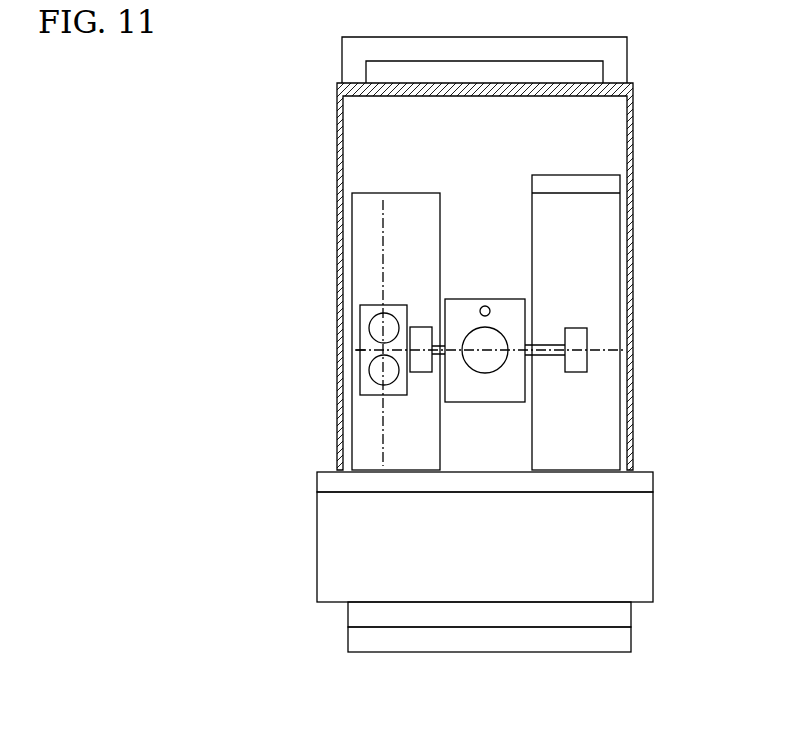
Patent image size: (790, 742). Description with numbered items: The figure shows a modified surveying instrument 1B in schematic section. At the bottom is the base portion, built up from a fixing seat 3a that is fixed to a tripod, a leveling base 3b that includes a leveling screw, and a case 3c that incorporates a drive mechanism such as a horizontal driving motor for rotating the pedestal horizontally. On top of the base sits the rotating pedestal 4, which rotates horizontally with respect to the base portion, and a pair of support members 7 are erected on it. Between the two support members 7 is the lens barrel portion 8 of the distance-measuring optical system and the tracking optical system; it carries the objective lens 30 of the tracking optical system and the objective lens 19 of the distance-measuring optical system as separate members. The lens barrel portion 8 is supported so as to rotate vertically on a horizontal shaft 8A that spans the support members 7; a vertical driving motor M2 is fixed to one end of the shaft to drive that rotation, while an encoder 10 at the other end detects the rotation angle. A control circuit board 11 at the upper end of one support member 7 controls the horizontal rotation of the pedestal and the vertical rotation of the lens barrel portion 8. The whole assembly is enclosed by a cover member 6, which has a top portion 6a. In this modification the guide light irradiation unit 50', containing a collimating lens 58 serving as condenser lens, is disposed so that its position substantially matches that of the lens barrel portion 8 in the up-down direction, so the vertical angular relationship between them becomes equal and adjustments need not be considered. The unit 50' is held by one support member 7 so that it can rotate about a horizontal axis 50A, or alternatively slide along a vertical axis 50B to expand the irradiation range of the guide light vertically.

The surveying instrument 1B is at (281, 72).
The cover member 6 is at (636, 135).
The top portion of housing 6a is at (617, 61).
The support member 7 is at (412, 205).
The control circuit board 11 is at (580, 185).
The vertical axis 50B is at (376, 246).
The guide light irradiation unit 50' is at (340, 329).
The lens 58 is at (375, 327).
The horizontal axis 50A is at (366, 350).
The encoder 10 is at (422, 372).
The lens barrel portion 8 is at (468, 392).
The objective lens 30 is at (488, 305).
The objective lens 19 is at (500, 365).
The horizontal shaft 8A is at (535, 338).
The vertical driving motor M2 is at (578, 357).
The rotating pedestal 4 is at (345, 486).
The case 3c is at (596, 527).
The leveling base 3b is at (607, 612).
The fixing seat 3a is at (600, 632).